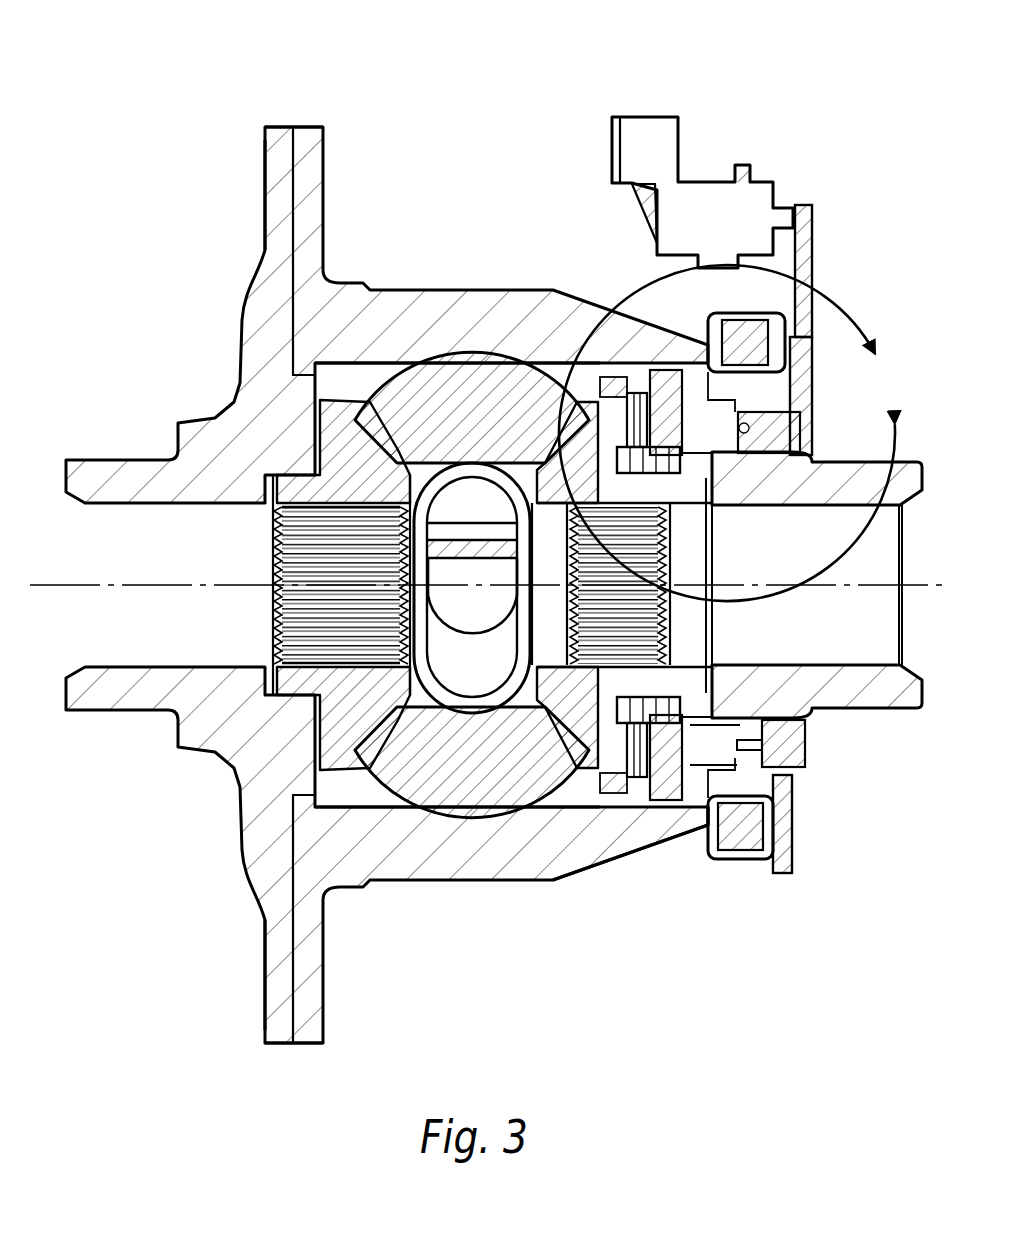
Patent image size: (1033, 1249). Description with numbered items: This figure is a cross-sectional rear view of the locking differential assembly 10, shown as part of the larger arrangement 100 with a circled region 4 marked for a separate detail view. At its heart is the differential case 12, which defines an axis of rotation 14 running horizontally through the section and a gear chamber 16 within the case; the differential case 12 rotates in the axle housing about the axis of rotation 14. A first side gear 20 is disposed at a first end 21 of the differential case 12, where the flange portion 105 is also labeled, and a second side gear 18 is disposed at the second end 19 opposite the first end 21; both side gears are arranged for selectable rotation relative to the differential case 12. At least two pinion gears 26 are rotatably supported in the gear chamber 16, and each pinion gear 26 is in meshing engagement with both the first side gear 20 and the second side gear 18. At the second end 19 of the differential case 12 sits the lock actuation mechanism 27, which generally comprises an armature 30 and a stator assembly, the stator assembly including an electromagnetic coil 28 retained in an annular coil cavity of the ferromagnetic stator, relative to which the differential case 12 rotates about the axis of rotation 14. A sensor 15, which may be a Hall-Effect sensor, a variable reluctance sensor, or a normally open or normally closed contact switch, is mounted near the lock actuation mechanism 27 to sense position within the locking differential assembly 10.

The wheel end assembly 100 is at (266, 129).
The locking differential assembly 10 is at (210, 263).
The differential case 12 is at (238, 347).
The first end 21 is at (278, 158).
The flange portion 105 is at (278, 202).
The axis of rotation 14 is at (50, 585).
The gear chamber 16 is at (358, 372).
The second end 19 is at (670, 847).
The first side gear 20 is at (342, 443).
The pinion gears 26 is at (472, 410).
The second side gear 18 is at (697, 680).
The electromagnetic coil 28 is at (743, 830).
The lock actuation mechanism 27 is at (838, 253).
The armature 30 is at (797, 852).
The sensor 15 is at (715, 203).
The detail view circle 4 is at (727, 433).